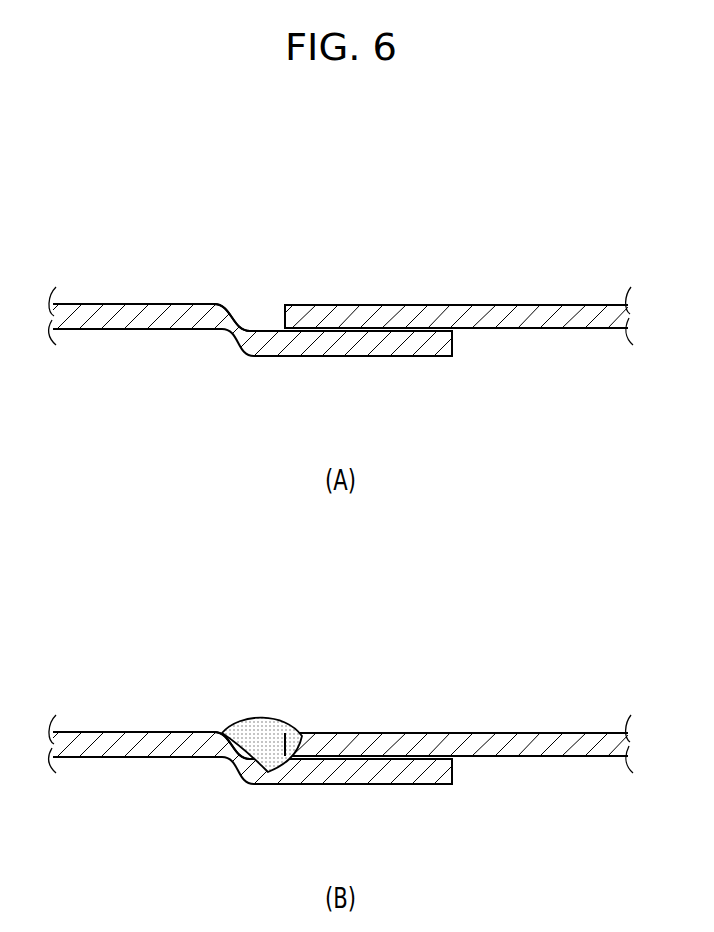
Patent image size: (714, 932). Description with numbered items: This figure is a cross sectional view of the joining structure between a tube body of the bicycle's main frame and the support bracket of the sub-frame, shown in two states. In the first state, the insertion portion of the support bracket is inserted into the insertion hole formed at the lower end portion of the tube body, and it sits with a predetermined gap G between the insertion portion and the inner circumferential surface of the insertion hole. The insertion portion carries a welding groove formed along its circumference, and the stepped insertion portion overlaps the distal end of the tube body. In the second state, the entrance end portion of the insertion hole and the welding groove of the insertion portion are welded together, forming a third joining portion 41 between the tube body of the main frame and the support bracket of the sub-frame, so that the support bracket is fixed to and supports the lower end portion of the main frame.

The third joining portion 41 is at (262, 716).
The gap G is at (392, 377).